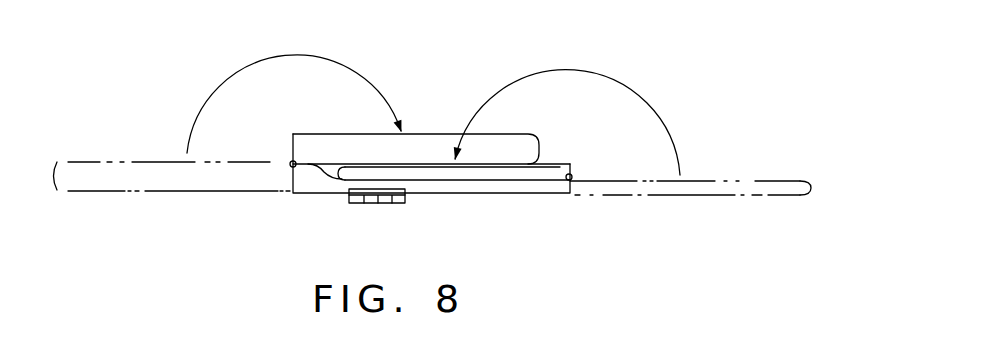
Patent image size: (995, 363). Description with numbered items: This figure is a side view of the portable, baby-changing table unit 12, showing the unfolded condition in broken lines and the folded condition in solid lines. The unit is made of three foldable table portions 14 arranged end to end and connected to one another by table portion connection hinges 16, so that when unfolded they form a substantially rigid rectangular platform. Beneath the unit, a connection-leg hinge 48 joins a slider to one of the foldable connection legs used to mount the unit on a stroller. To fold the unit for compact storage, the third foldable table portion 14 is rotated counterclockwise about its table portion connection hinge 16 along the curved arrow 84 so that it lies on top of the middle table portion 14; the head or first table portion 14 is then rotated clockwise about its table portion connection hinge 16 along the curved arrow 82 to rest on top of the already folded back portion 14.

The portable, baby-changing table unit 12 is at (420, 124).
The foldable table portion 14 is at (511, 137).
The table portion connection hinge 16 is at (292, 162).
The connection-leg hinge 48 is at (405, 198).
The curved arrow 82 is at (276, 56).
The curved arrow 84 is at (607, 72).